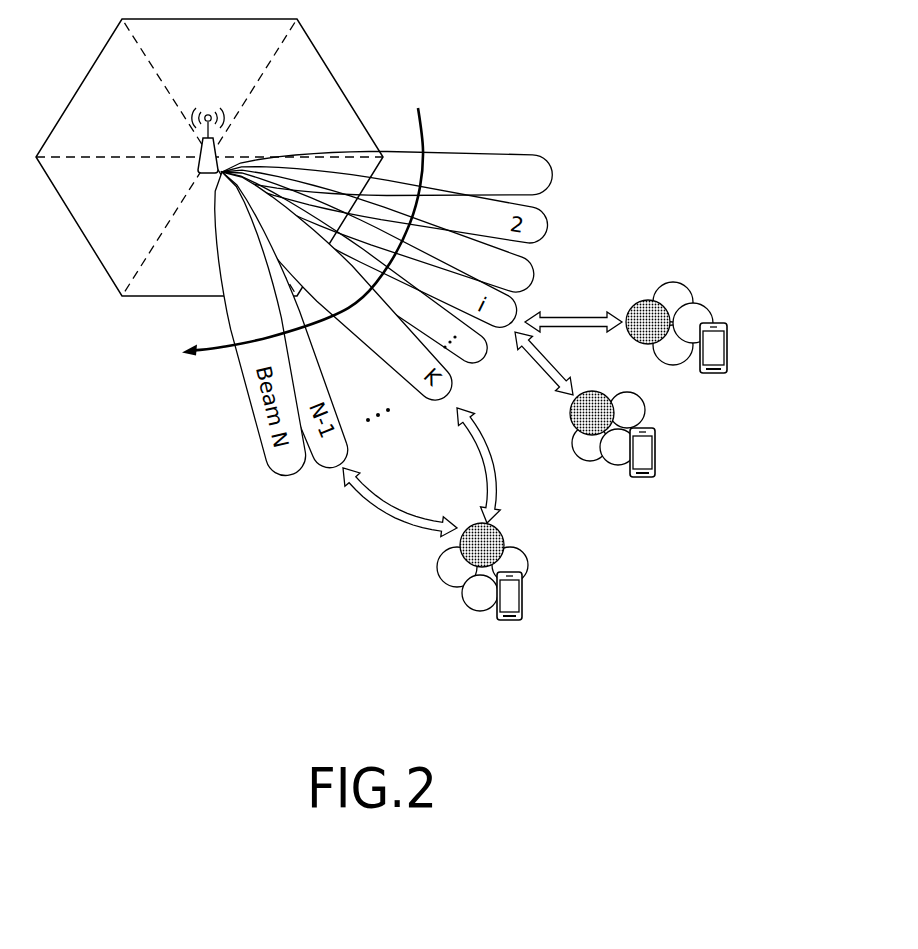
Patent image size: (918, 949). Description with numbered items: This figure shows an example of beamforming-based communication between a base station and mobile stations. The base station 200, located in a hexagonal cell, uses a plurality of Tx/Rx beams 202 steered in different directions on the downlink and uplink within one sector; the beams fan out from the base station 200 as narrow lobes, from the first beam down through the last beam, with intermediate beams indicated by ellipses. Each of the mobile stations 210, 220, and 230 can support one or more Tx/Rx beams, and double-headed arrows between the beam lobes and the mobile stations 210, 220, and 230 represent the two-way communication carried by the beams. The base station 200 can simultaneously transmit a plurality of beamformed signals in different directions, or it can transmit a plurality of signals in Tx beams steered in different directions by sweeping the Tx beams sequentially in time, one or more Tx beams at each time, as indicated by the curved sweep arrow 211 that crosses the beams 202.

The base station 200 is at (198, 157).
The Tx/Rx beams 202 is at (553, 175).
The beam sweeping 211 is at (421, 122).
The mobile station 210 is at (727, 348).
The mobile station 220 is at (655, 452).
The mobile station 230 is at (522, 597).